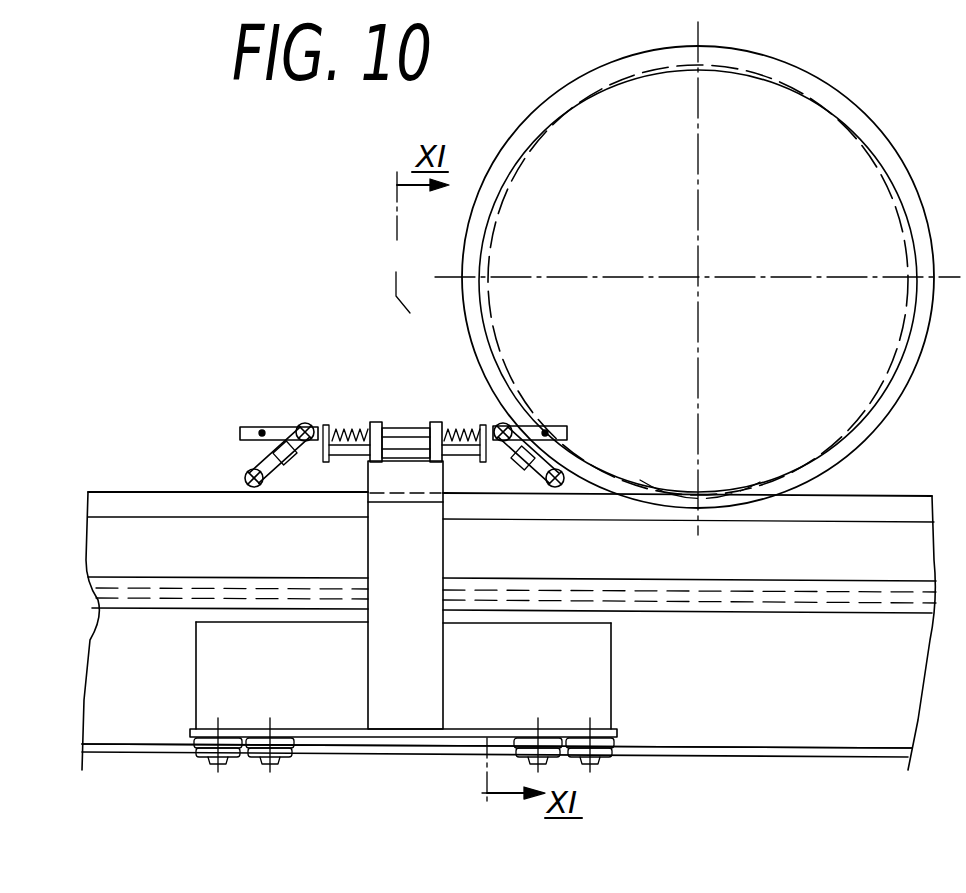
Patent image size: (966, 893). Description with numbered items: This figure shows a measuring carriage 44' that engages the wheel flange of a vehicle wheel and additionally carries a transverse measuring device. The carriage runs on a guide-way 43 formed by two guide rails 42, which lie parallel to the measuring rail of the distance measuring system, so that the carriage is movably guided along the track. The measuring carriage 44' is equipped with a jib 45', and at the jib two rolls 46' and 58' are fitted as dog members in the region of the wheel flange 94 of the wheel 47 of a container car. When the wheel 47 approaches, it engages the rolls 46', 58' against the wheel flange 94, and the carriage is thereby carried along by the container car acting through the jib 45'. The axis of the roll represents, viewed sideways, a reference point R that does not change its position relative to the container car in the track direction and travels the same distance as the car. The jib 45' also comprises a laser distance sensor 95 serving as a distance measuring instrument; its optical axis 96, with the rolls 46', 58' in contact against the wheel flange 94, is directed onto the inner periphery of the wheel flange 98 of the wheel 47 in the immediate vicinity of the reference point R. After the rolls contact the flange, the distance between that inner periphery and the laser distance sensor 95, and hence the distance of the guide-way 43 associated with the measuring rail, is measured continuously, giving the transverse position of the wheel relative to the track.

The wheel 47 is at (833, 147).
The wheel flange 98 is at (528, 152).
The guide rail 42 is at (707, 752).
The guide-way 43 is at (497, 746).
The measuring carriage 44' is at (452, 697).
The jib 45' is at (353, 595).
The roll 46' is at (440, 422).
The reference point R is at (474, 554).
The laser distance sensor 95 is at (245, 427).
The optical axis 96 is at (266, 428).
The roll 58' is at (410, 501).
The wheel flange 94 is at (720, 503).